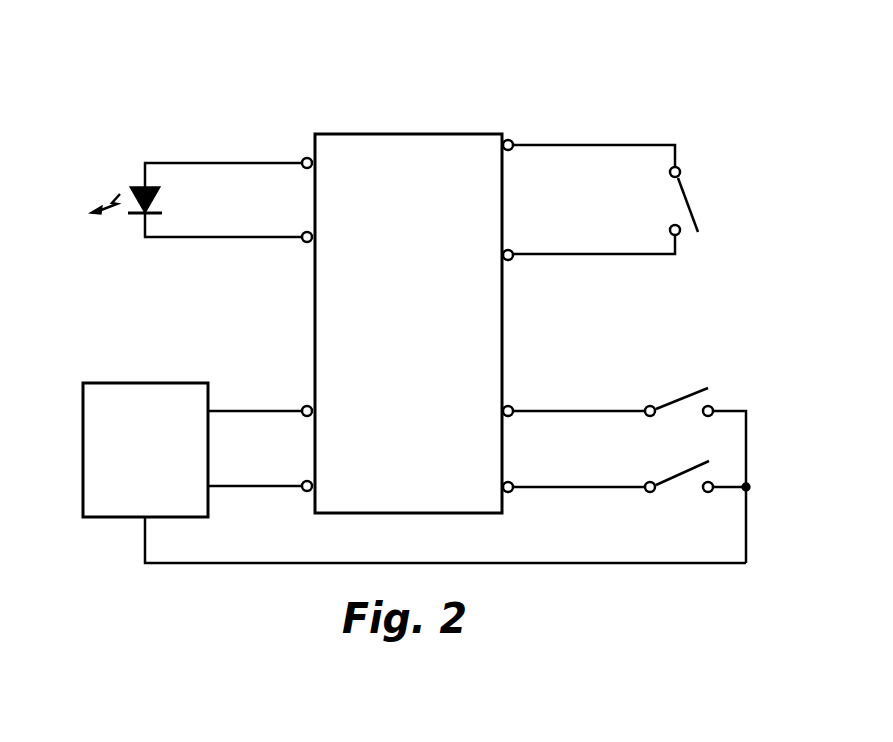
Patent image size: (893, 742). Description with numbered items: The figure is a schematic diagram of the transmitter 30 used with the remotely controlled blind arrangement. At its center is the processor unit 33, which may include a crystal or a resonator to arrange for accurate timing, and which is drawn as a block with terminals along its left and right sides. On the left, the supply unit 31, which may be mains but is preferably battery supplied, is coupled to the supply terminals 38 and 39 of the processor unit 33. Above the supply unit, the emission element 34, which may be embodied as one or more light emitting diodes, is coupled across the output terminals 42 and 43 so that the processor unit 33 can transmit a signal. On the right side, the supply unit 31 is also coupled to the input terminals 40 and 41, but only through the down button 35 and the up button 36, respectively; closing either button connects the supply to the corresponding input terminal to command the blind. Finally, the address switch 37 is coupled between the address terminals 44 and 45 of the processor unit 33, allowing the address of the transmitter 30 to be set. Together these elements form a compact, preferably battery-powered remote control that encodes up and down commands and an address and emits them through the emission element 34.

The control circuit 30 is at (622, 113).
The supply unit 31 is at (108, 383).
The processor unit 33 is at (462, 133).
The emission element 34 is at (130, 193).
The down button 35 is at (677, 472).
The up button 36 is at (680, 393).
The address switch 37 is at (690, 200).
The supply terminal 38 is at (303, 492).
The supply terminal 39 is at (303, 405).
The input terminal 40 is at (515, 492).
The input terminal 41 is at (513, 405).
The output terminal 42 is at (303, 244).
The output terminal 43 is at (304, 159).
The address terminal 44 is at (513, 260).
The address terminal 45 is at (513, 142).